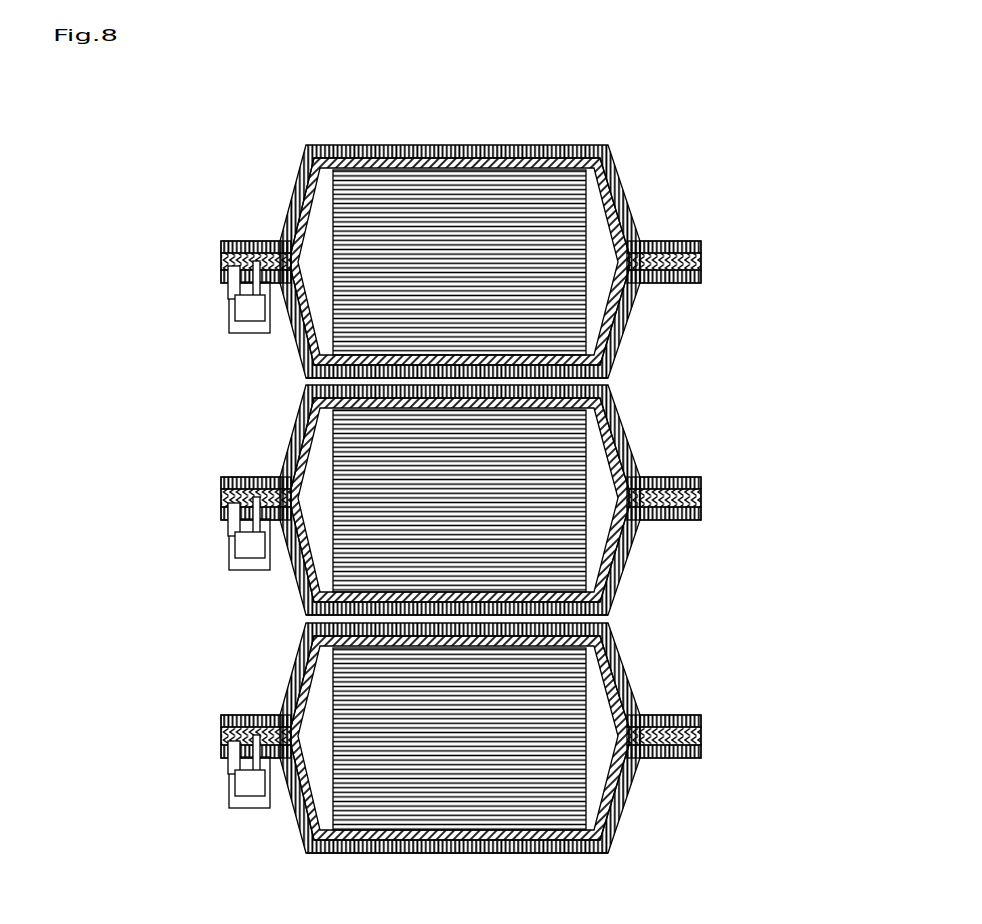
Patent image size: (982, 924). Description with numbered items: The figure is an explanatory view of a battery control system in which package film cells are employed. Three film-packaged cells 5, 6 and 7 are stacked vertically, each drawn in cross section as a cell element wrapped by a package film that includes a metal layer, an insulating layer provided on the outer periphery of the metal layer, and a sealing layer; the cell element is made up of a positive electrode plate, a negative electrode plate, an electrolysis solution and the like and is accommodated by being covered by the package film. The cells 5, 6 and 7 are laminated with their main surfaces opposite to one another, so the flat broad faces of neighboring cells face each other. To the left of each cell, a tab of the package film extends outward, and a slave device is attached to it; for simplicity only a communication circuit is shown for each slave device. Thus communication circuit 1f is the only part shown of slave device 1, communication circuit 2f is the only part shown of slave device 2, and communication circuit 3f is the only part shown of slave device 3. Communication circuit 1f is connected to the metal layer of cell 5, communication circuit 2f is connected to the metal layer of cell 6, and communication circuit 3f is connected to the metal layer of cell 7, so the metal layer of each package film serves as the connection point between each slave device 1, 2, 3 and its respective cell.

The cell 5 is at (462, 262).
The cell 6 is at (463, 501).
The cell 7 is at (463, 738).
The communication circuit 1f is at (232, 326).
The communication circuit 2f is at (232, 563).
The communication circuit 3f is at (232, 801).
The slave device 1 is at (179, 310).
The slave device 2 is at (181, 546).
The slave device 3 is at (181, 784).